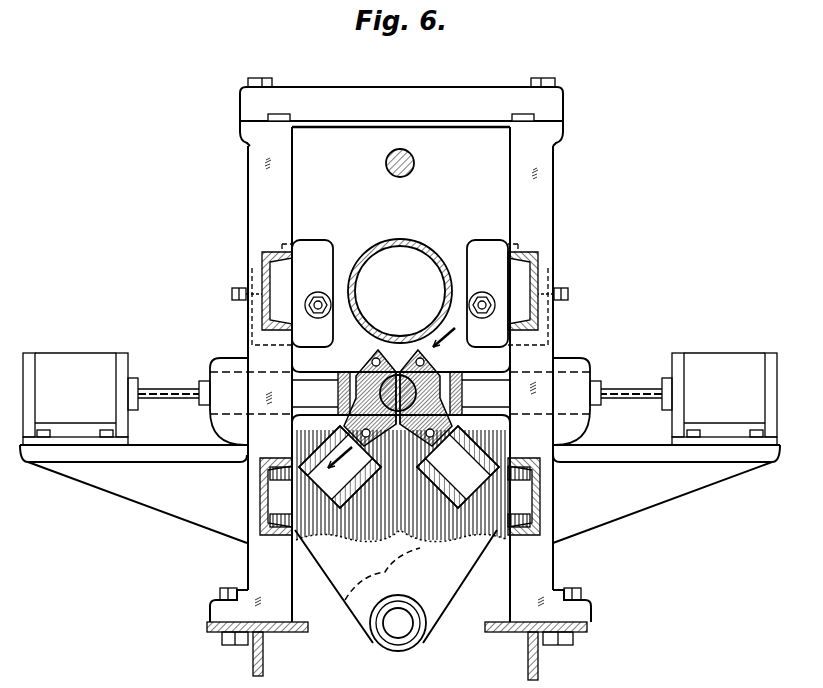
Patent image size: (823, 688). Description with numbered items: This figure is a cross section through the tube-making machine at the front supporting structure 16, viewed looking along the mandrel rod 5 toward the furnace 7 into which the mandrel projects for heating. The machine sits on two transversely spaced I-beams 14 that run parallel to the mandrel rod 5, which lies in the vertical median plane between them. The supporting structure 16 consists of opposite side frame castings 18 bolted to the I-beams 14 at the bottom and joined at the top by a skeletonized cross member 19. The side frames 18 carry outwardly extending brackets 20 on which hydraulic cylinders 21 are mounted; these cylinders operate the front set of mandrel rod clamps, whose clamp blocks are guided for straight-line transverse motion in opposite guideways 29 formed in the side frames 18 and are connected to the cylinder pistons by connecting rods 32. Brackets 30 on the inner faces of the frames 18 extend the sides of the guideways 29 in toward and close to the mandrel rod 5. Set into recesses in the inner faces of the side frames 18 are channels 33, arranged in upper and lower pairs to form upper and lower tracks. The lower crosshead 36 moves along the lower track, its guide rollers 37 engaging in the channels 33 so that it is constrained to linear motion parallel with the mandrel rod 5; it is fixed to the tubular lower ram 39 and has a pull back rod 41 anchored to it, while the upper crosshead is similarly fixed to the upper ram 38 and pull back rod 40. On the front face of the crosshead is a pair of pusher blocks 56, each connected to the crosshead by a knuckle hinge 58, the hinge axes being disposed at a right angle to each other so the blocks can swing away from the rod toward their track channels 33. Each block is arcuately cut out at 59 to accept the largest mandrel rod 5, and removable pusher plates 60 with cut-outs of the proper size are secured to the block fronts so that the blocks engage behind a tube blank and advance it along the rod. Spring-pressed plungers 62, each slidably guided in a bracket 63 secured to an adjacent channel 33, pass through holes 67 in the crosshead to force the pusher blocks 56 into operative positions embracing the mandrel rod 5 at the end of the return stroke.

The mandrel rod 5 is at (440, 376).
The furnace 7 is at (391, 405).
The I-beams 14 is at (252, 658).
The supporting structure 16 is at (573, 118).
The side frame castings 18 is at (248, 203).
The cross members 19 is at (372, 88).
The brackets 20 is at (135, 452).
The hydraulic cylinders 21 is at (72, 355).
The guideways 29 is at (222, 357).
The brackets 30 is at (322, 385).
The connecting rods 32 is at (170, 386).
The channels 33 is at (262, 272).
The crosshead 36 is at (435, 632).
The guide rollers 37 is at (274, 493).
The upper ram 38 is at (372, 248).
The lower ram 39 is at (372, 572).
The pull back rod 40 is at (416, 160).
The pull back rod 41 is at (380, 635).
The pusher blocks 56 is at (398, 354).
The knuckle hinge 58 is at (306, 440).
The arcuate cut-out 59 is at (360, 372).
The pusher plates 60 is at (372, 358).
The spring-pressed plungers 62 is at (318, 292).
The bracket 63 is at (318, 240).
The hole 67 is at (312, 540).